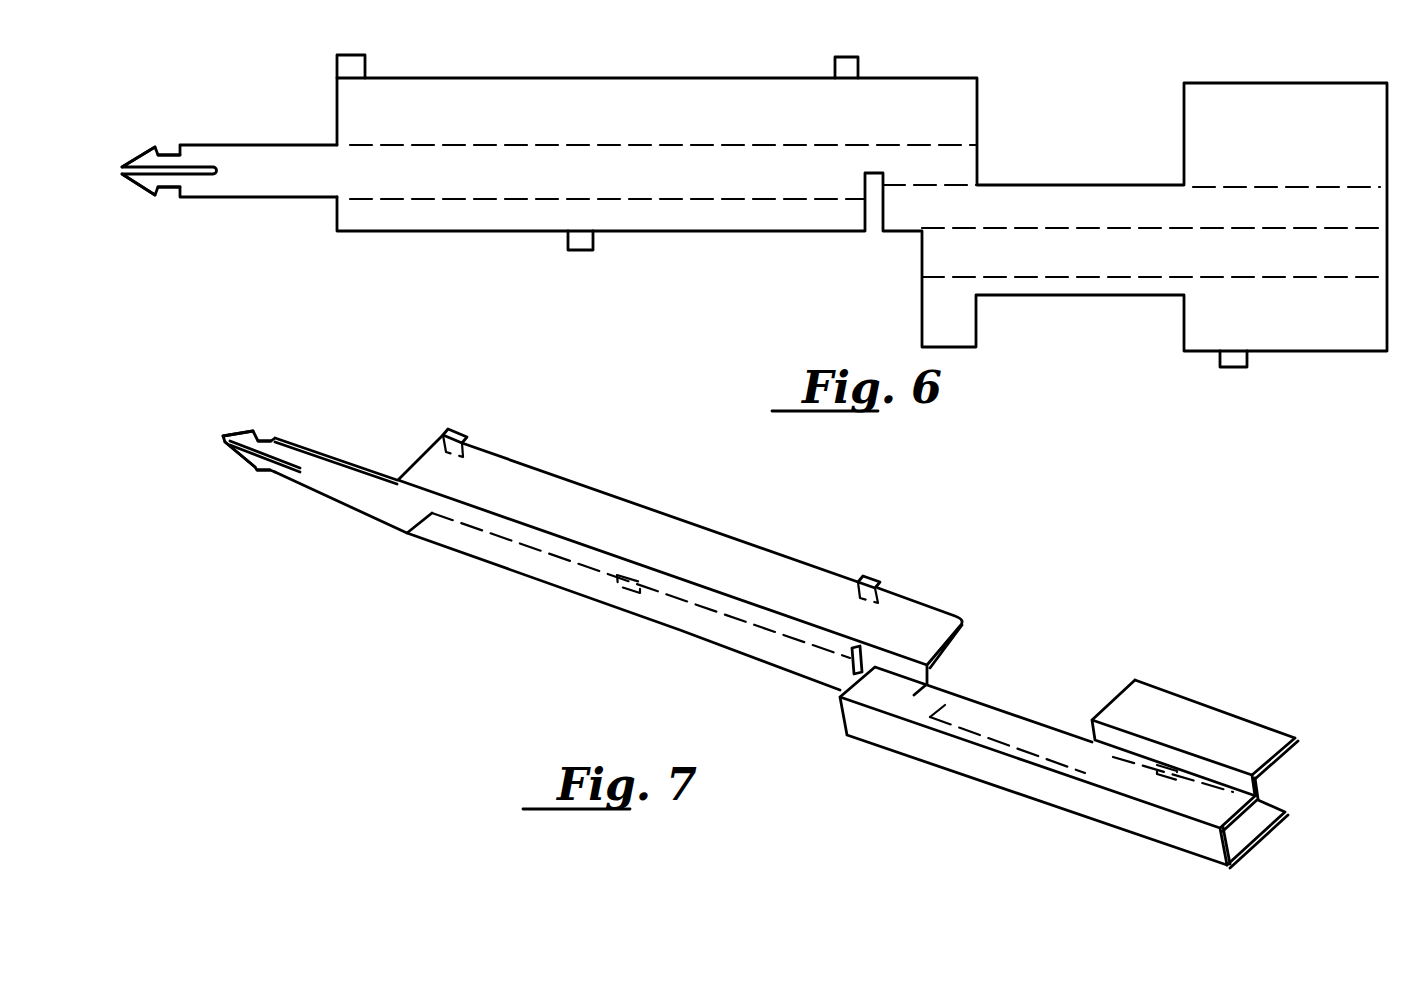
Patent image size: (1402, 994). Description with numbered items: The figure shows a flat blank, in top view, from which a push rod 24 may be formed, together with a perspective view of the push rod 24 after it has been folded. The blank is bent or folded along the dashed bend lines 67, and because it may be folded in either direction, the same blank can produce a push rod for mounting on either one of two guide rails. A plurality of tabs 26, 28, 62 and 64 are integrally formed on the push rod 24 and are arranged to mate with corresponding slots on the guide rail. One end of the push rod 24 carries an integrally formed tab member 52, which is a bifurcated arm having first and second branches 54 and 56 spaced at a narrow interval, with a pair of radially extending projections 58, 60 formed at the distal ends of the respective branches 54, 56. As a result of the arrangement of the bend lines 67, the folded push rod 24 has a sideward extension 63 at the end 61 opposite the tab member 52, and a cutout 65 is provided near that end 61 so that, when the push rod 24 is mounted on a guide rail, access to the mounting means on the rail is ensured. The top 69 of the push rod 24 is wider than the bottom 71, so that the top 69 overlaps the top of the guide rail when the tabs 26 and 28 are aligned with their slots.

In FIG. 6, the push rod 24 is at (592, 78).
In FIG. 7, the push rod 24 is at (680, 519).
In FIG. 6, the tab 26 is at (355, 55).
In FIG. 7, the tab 26 is at (458, 442).
In FIG. 6, the tab 28 is at (848, 60).
In FIG. 7, the tab 28 is at (877, 583).
In FIG. 6, the tab member 52 is at (278, 199).
In FIG. 7, the tab member 52 is at (337, 508).
In FIG. 6, the first branch 54 is at (169, 199).
In FIG. 7, the first branch 54 is at (267, 471).
In FIG. 6, the second branch 56 is at (165, 152).
In FIG. 7, the second branch 56 is at (258, 438).
In FIG. 6, the radially extending projection 58 is at (137, 186).
In FIG. 7, the radially extending projection 58 is at (237, 459).
In FIG. 6, the radially extending projection 60 is at (141, 150).
In FIG. 7, the radially extending projection 60 is at (243, 432).
In FIG. 7, the end 61 is at (1270, 827).
In FIG. 6, the tab 62 is at (578, 252).
In FIG. 7, the tab 62 is at (628, 593).
In FIG. 7, the sideward extension 63 is at (1037, 800).
In FIG. 6, the tab 64 is at (1235, 367).
In FIG. 7, the tab 64 is at (1163, 776).
In FIG. 7, the cutout 65 is at (1052, 664).
In FIG. 6, the bend lines 67 is at (730, 199).
In FIG. 6, the top 69 is at (490, 105).
In FIG. 7, the top 69 is at (595, 515).
In FIG. 6, the bottom 71 is at (765, 215).
In FIG. 7, the bottom 71 is at (750, 642).